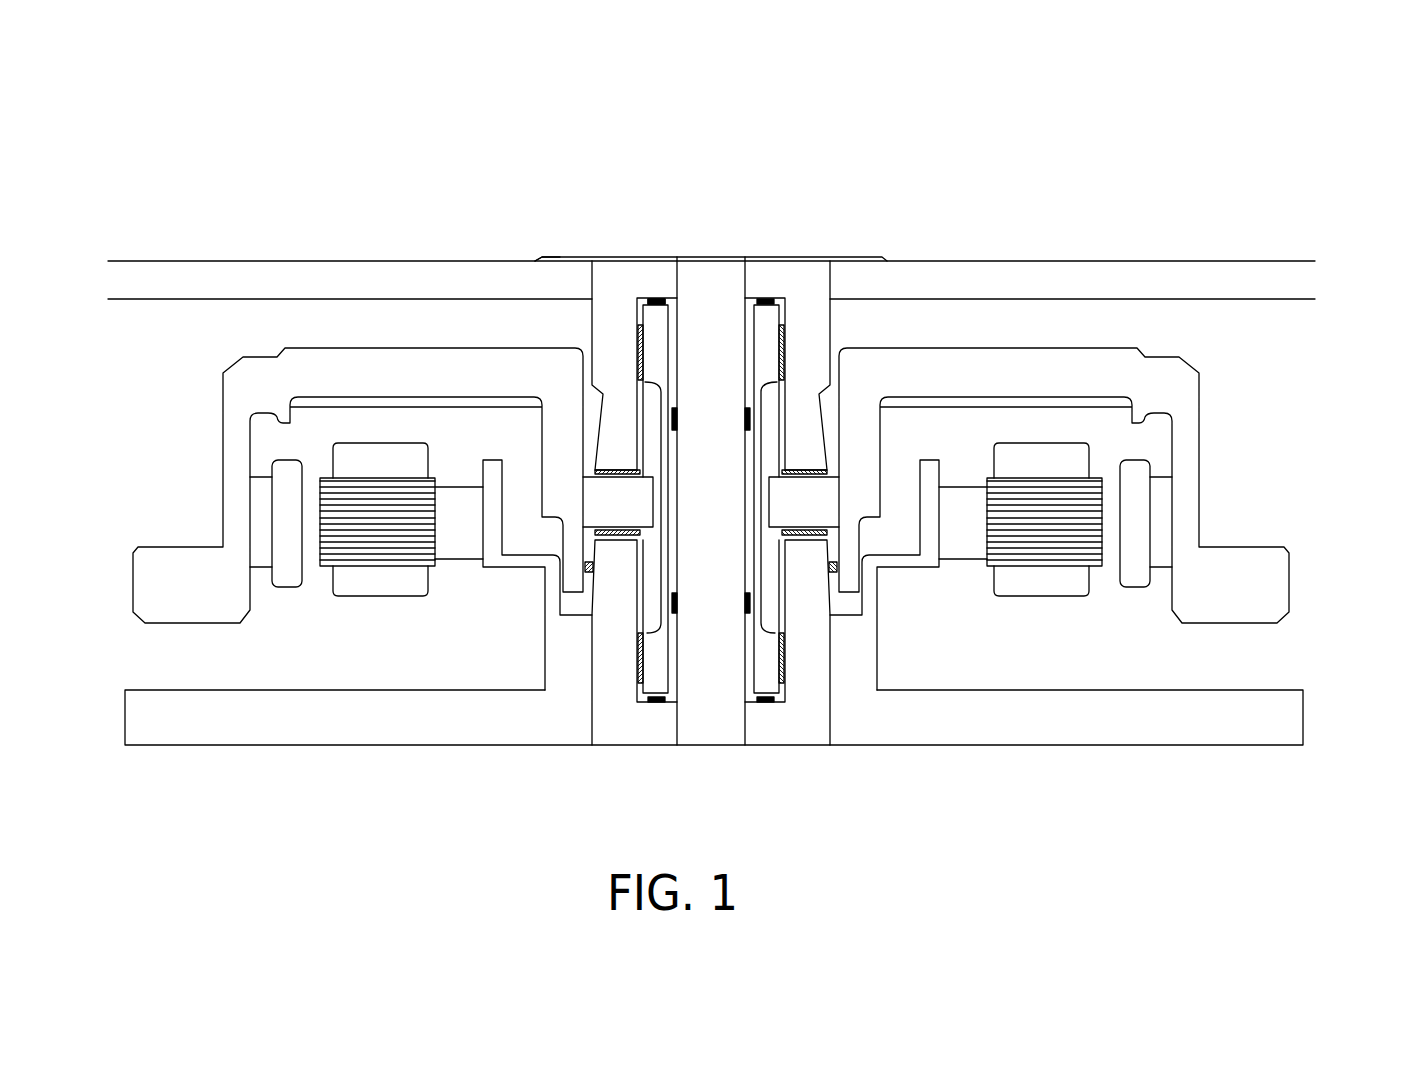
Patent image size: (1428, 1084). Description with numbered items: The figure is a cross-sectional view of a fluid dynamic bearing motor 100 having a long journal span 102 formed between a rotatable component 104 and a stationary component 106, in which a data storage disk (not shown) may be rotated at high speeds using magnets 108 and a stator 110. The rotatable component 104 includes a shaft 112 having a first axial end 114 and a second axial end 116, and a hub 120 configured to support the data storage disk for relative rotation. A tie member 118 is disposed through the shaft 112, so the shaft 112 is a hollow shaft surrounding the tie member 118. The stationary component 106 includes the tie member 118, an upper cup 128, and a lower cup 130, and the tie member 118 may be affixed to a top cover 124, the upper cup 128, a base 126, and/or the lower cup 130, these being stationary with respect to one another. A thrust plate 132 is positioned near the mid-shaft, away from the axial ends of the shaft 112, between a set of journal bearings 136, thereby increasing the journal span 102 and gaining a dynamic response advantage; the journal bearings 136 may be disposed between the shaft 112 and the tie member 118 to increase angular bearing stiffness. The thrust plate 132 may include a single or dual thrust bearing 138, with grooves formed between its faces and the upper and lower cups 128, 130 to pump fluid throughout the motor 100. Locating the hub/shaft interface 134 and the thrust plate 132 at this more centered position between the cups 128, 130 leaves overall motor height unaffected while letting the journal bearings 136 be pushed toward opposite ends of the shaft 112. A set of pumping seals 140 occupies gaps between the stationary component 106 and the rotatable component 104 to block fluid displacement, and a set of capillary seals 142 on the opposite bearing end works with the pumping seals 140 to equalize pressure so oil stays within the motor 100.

The fluid dynamic bearing motor 100 is at (165, 197).
The journal span 102 is at (685, 490).
The rotatable component 104 is at (906, 345).
The stationary component 106 is at (838, 270).
The magnets 108 is at (1138, 548).
The stator 110 is at (1042, 572).
The shaft 112 is at (655, 332).
The first axial end 114 is at (659, 299).
The second axial end 116 is at (658, 692).
The tie member 118 is at (720, 683).
The hub 120 is at (1290, 587).
The top cover 124 is at (547, 259).
The base 126 is at (422, 745).
The upper cup 128 is at (768, 280).
The lower cup 130 is at (797, 710).
The thrust plate 132 is at (822, 515).
The hub/shaft interface 134 is at (765, 495).
The journal bearings 136 is at (779, 633).
The thrust bearing 138 is at (652, 298).
The pumping seals 140 is at (590, 572).
The capillary seals 142 is at (605, 426).